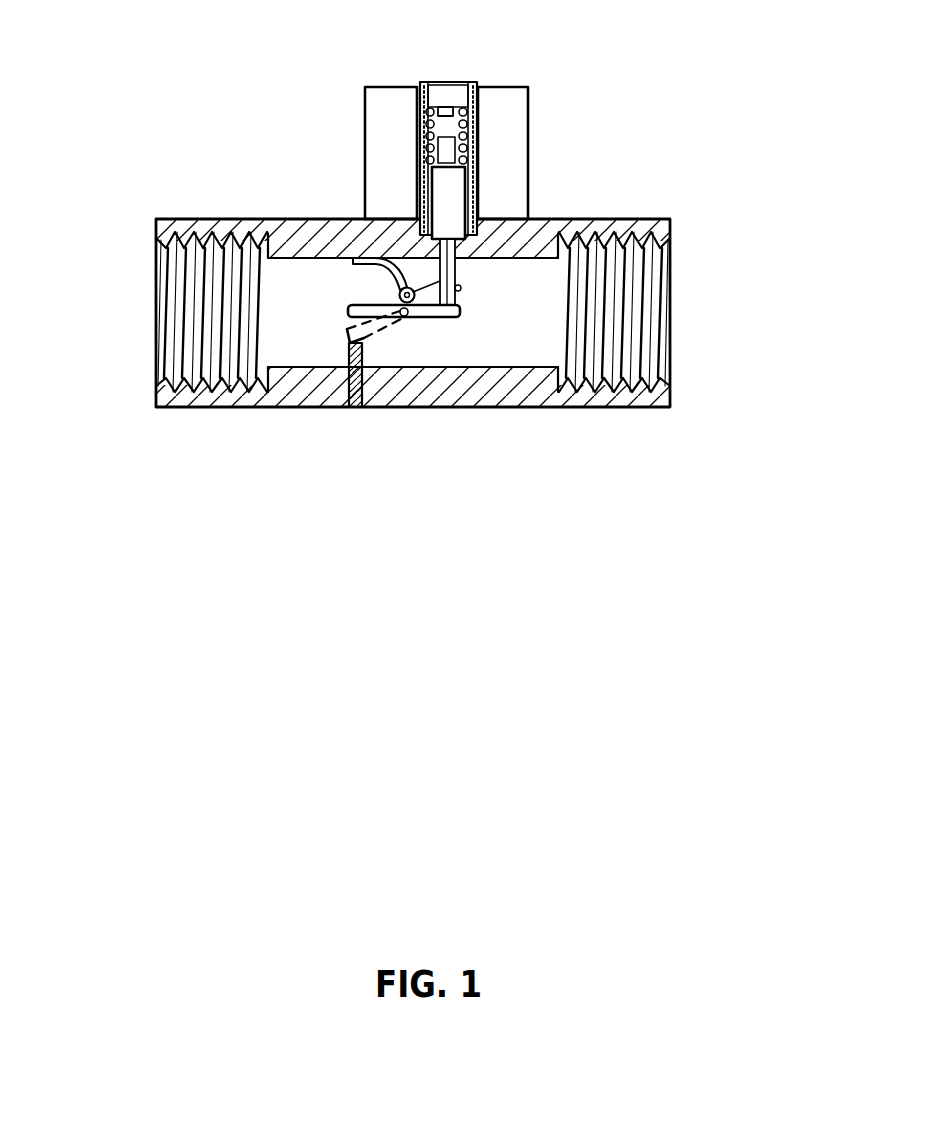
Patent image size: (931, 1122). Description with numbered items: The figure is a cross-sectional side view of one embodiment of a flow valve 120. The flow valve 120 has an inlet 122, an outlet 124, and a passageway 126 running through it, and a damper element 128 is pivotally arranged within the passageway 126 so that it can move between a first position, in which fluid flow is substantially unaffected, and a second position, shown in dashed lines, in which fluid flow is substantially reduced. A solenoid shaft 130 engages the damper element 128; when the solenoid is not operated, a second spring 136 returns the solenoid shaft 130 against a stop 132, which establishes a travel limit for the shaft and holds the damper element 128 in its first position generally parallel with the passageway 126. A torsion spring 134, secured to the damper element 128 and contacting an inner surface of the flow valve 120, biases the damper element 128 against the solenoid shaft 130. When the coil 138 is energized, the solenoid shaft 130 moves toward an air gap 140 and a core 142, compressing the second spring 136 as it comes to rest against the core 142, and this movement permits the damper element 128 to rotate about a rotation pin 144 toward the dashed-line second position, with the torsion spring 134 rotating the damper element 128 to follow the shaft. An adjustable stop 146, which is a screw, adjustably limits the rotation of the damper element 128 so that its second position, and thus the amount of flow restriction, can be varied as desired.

The flow valve 120 is at (180, 100).
The inlet 122 is at (125, 308).
The outlet 124 is at (682, 313).
The passageway 126 is at (303, 360).
The damper element 128 is at (446, 317).
The solenoid shaft 130 is at (458, 288).
The stop 132 is at (372, 257).
The torsion spring 134 is at (392, 281).
The second spring 136 is at (415, 127).
The coil 138 is at (517, 135).
The air gap 140 is at (470, 104).
The core 142 is at (447, 107).
The rotation pin 144 is at (405, 317).
The adjustable stop 146 is at (353, 398).